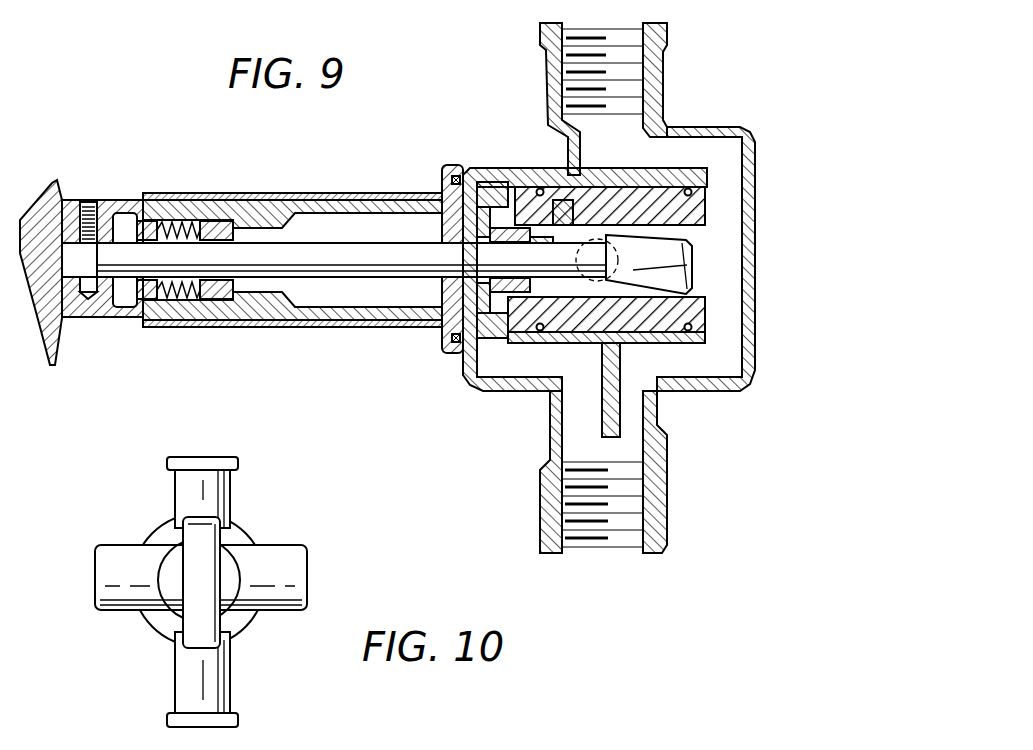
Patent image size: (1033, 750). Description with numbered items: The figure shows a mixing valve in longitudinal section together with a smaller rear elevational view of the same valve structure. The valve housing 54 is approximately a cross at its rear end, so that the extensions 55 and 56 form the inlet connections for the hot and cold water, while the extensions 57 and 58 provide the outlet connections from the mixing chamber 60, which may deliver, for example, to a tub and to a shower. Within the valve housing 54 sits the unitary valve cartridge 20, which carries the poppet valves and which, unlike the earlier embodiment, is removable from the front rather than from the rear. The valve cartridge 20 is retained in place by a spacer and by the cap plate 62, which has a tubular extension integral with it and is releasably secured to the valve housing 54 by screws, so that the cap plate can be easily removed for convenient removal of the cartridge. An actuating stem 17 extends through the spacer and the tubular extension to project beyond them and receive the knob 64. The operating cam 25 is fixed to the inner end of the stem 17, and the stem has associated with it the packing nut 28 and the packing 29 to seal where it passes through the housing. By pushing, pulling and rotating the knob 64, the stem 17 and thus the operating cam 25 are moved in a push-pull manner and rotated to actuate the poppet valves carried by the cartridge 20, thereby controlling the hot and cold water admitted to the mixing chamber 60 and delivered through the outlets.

In FIG. 9, the actuating stem 17 is at (352, 258).
In FIG. 9, the valve cartridge 20 is at (660, 334).
In FIG. 9, the operating cam 25 is at (664, 262).
In FIG. 9, the packing nut 28 is at (143, 288).
In FIG. 9, the packing 29 is at (208, 283).
In FIG. 9, the valve housing 54 is at (724, 394).
In FIG. 10, the valve housing 54 is at (145, 629).
In FIG. 10, the extension 55 is at (287, 577).
In FIG. 10, the extension 56 is at (112, 567).
In FIG. 9, the extension 57 is at (663, 513).
In FIG. 10, the extension 57 is at (195, 683).
In FIG. 9, the extension 58 is at (648, 78).
In FIG. 10, the extension 58 is at (195, 481).
In FIG. 9, the mixing chamber 60 is at (537, 222).
In FIG. 9, the cap plate 62 is at (410, 331).
In FIG. 9, the knob 64 is at (50, 218).